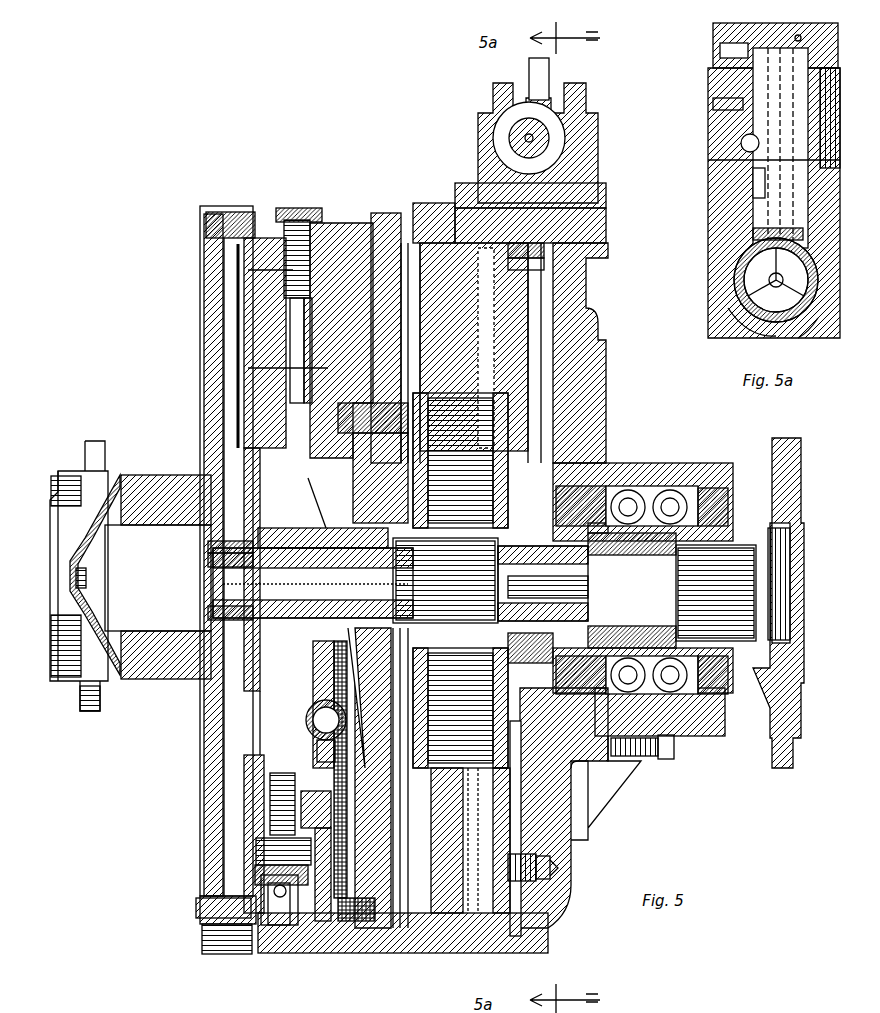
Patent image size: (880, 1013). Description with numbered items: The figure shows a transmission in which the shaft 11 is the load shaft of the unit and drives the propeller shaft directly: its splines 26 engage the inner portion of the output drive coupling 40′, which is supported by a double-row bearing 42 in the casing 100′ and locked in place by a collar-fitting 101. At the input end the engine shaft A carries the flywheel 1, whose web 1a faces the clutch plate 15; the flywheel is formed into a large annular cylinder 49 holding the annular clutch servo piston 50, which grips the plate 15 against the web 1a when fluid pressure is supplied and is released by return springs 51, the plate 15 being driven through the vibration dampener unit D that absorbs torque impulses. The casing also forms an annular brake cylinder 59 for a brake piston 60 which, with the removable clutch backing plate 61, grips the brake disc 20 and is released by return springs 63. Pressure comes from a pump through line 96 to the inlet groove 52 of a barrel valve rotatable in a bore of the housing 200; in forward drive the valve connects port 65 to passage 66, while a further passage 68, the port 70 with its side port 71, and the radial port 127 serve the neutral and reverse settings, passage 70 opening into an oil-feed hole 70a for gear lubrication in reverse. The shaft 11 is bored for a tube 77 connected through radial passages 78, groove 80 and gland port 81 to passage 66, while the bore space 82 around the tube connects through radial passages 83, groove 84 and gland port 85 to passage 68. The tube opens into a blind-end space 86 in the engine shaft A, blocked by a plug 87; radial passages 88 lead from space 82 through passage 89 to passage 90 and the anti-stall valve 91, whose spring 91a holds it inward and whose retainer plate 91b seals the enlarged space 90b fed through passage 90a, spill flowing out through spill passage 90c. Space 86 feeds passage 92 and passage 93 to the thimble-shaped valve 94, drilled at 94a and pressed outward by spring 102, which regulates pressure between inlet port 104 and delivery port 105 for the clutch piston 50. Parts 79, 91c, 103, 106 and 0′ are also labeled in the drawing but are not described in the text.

In FIG. 5, the flywheel 1 is at (335, 225).
In FIG. 5, the flywheel web 1a is at (380, 215).
In FIG. 5, the shaft 11 is at (308, 503).
In FIG. 5, the clutch plate 15 is at (400, 470).
In FIG. 5, the brake disc 20 is at (500, 930).
In FIG. 5, the splines 26 is at (700, 690).
In FIG. 5, the output drive coupling 40′ is at (796, 500).
In FIG. 5, the double-row bearing 42 is at (664, 482).
In FIG. 5, the annular cylinder 49 is at (330, 402).
In FIG. 5, the clutch servo piston 50 is at (345, 440).
In FIG. 5, the return springs 51 is at (345, 913).
In FIG. 5, the inlet groove 52 is at (545, 125).
In FIG. 5, the annular brake cylinder 59 is at (540, 236).
In FIG. 5, the brake piston 60 is at (480, 385).
In FIG. 5, the removable clutch backing plate 61 is at (440, 905).
In FIG. 5, the return springs 63 is at (450, 175).
In FIG. 5, the port 65 is at (580, 178).
In FIG. 5, the passage 66 is at (560, 188).
In FIG. 5A, the passage 66 is at (800, 152).
In FIG. 5, the passage 68 is at (540, 250).
In FIG. 5A, the passage 68 is at (735, 95).
In FIG. 5, the port 70 is at (548, 308).
In FIG. 5A, the port 70 is at (735, 160).
In FIG. 5, the oil-feed hole 70a is at (520, 505).
In FIG. 5A, the oil-feed hole 70a is at (745, 185).
In FIG. 5A, the side port 71 is at (722, 40).
In FIG. 5, the tube 77 is at (208, 572).
In FIG. 5A, the tube 77 is at (735, 290).
In FIG. 5, the radial passages 78 is at (575, 580).
In FIG. 5A, the radial passages 78 is at (810, 312).
In FIG. 5, the plug 79 is at (535, 874).
In FIG. 5, the groove 80 is at (530, 640).
In FIG. 5A, the groove 80 is at (725, 310).
In FIG. 5, the gland port 81 is at (470, 660).
In FIG. 5, the cylindrical bore space 82 is at (280, 522).
In FIG. 5, the radial passages 83 is at (565, 600).
In FIG. 5A, the radial passages 83 is at (745, 246).
In FIG. 5A, the groove 84 is at (730, 265).
In FIG. 5, the gland port 85 is at (580, 540).
In FIG. 5A, the gland port 85 is at (745, 226).
In FIG. 5, the blind-end cylindrical space 86 is at (130, 640).
In FIG. 5, the plug 87 is at (220, 605).
In FIG. 5, the radial passages 88 is at (220, 550).
In FIG. 5, the passage 89 is at (218, 535).
In FIG. 5, the passage 90 is at (232, 318).
In FIG. 5, the passage 90a is at (255, 258).
In FIG. 5, the enlarged space 90b is at (262, 210).
In FIG. 5, the spill passage 90c is at (240, 360).
In FIG. 5, the anti-stall valve 91 is at (228, 237).
In FIG. 5, the spring 91a is at (245, 282).
In FIG. 5, the retainer plate 91b is at (304, 206).
In FIG. 5, the spring 91c is at (289, 212).
In FIG. 5, the passage 92 is at (252, 625).
In FIG. 5, the passage 93 is at (230, 768).
In FIG. 5, the valve 94 is at (262, 917).
In FIG. 5, the drilled hole 94a is at (272, 890).
In FIG. 5, the line 96 is at (542, 60).
In FIG. 5, the casing 100′ is at (612, 440).
In FIG. 5A, the casing 100′ is at (725, 100).
In FIG. 5, the collar-fitting 101 is at (708, 480).
In FIG. 5, the spring 102 is at (268, 765).
In FIG. 5, the block 103 is at (248, 843).
In FIG. 5, the inlet port 104 is at (322, 860).
In FIG. 5, the delivery port 105 is at (312, 913).
In FIG. 5, the plate 106 is at (190, 900).
In FIG. 5A, the radial port 127 is at (822, 70).
In FIG. 5, the housing 200 is at (480, 106).
In FIG. 5, the engine shaft A is at (134, 470).
In FIG. 5, the vibration dampener unit D is at (305, 704).
In FIG. 5, the pin 0′ is at (528, 130).
In FIG. 5A, the pin 0′ is at (792, 30).